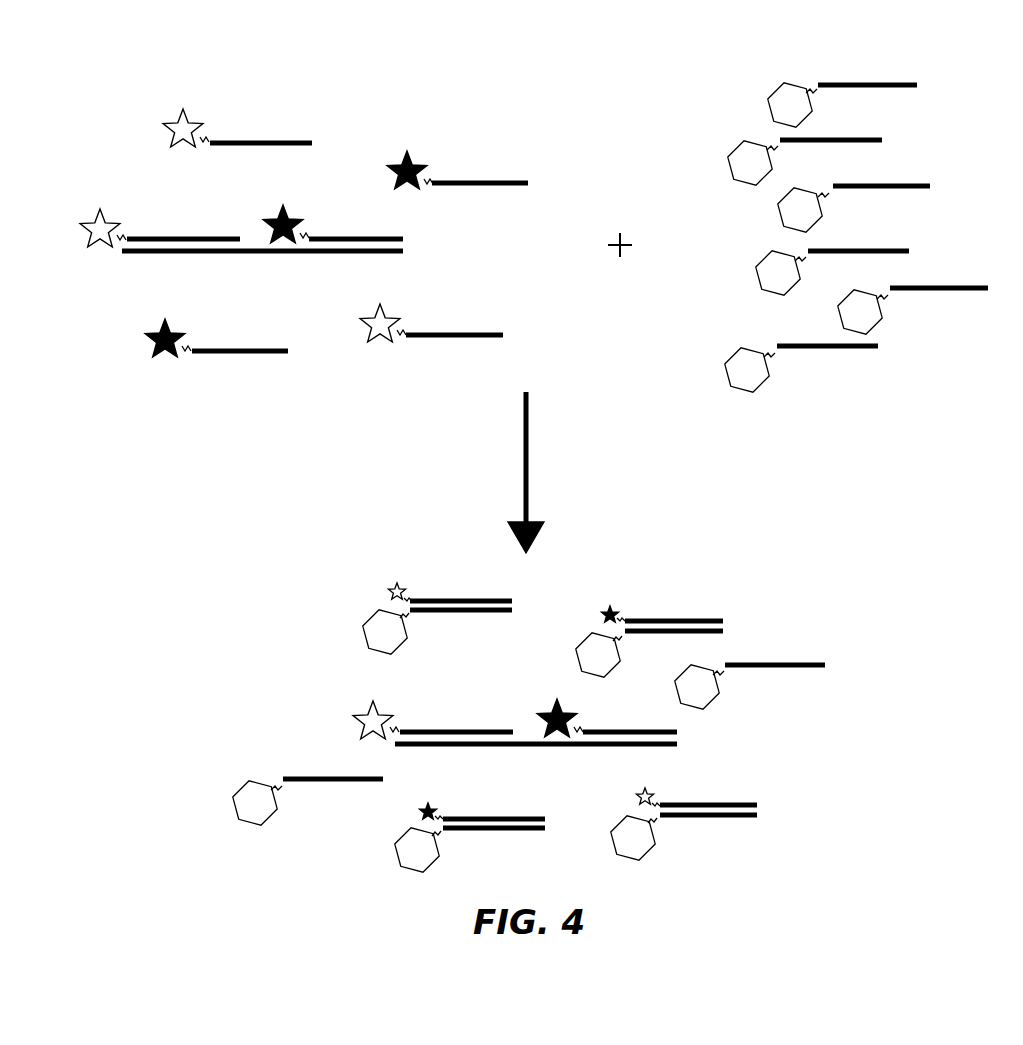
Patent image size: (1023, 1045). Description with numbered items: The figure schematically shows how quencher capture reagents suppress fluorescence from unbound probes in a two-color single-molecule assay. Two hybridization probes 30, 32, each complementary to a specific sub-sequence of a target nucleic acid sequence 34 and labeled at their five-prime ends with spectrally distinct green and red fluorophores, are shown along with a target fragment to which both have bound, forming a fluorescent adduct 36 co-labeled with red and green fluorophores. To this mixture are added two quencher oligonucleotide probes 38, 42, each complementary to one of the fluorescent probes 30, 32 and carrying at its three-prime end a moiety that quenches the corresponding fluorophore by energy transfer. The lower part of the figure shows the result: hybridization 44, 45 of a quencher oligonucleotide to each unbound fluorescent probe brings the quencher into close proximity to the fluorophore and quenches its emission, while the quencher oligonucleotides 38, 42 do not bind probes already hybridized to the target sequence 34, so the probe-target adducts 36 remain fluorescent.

The green-labeled hybridization probe 30 is at (225, 130).
The red-labeled hybridization probe 32 is at (450, 165).
The target nucleic acid sequence 34 is at (370, 254).
The fluorescent adduct 36 is at (388, 480).
The quencher oligonucleotide probe 38 is at (870, 83).
The quencher oligonucleotide probe 42 is at (857, 139).
The hybridization of quencher oligonucleotide to unbound probe 44 is at (363, 601).
The hybridization of quencher oligonucleotide to unbound probe 45 is at (738, 620).